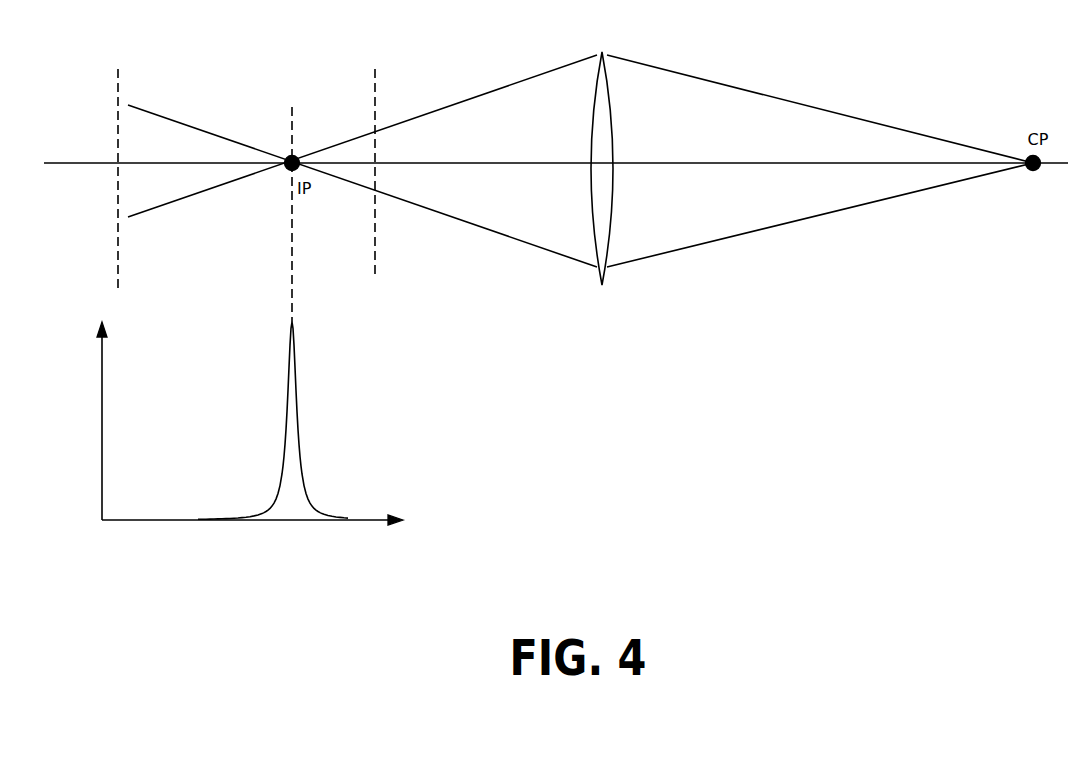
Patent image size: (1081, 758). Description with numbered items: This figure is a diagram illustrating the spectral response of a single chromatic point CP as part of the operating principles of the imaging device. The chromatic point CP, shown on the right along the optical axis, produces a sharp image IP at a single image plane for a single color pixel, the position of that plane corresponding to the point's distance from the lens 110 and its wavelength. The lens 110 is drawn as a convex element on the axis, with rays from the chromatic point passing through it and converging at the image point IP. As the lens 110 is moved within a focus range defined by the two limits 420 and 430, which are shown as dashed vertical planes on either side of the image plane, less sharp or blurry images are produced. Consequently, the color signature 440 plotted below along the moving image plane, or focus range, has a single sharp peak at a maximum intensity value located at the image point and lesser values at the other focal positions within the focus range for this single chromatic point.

The lens 110 is at (598, 153).
The focus range limit 420 is at (379, 163).
The focus range limit 430 is at (119, 165).
The color signature 440 is at (250, 423).